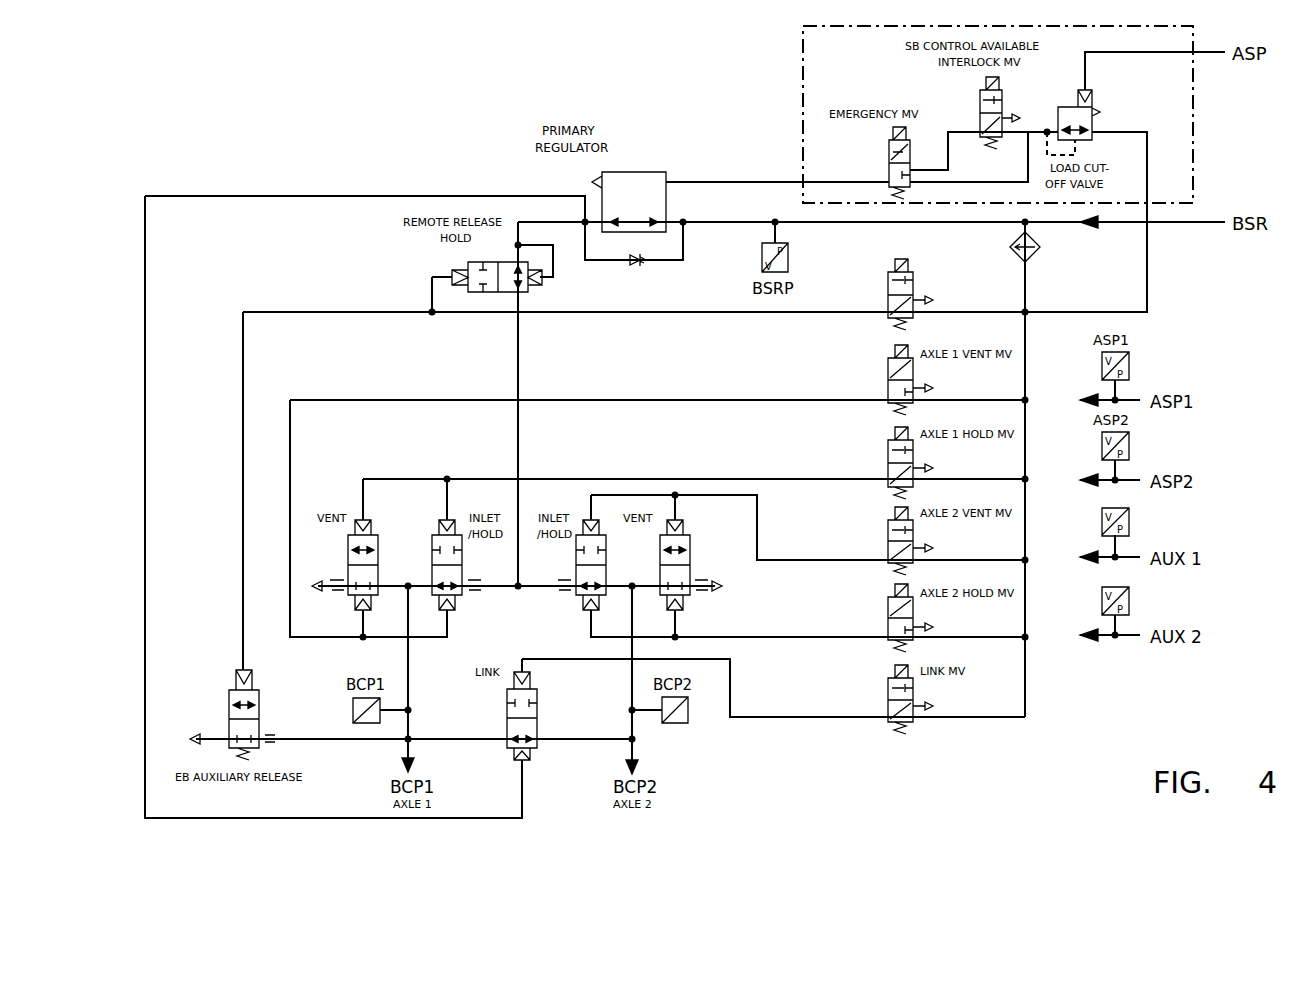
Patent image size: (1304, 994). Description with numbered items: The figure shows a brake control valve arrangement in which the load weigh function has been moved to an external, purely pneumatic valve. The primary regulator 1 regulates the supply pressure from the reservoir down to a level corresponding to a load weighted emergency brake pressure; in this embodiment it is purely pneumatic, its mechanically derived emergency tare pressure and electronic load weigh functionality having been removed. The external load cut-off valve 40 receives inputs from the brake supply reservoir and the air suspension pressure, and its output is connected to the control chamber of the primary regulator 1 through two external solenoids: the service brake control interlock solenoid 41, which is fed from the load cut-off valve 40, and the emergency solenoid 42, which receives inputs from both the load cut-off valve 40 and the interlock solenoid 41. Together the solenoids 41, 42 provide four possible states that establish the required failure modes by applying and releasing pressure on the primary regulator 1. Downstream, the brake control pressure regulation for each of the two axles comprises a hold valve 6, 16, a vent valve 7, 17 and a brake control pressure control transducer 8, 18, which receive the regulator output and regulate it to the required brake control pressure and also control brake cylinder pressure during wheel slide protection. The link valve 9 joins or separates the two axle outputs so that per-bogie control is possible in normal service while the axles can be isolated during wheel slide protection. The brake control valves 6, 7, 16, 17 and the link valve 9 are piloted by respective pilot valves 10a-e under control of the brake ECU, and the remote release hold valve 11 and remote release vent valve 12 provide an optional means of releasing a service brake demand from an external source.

The primary regulator 1 is at (633, 172).
The hold valve 6 is at (348, 545).
The vent valve 7 is at (432, 548).
The brake control pressure control transducer 8 is at (353, 710).
The link valve 9 is at (537, 700).
The pilot valves 10a-e is at (915, 727).
The remote release hold valve 11 is at (452, 277).
The remote release vent valve 12 is at (229, 697).
The hold valve 16 is at (591, 520).
The vent valve 17 is at (690, 540).
The brake control pressure control transducer 18 is at (680, 725).
The external load cut-off valve 40 is at (1092, 105).
The service brake control interlock solenoid 41 is at (980, 112).
The emergency solenoid 42 is at (889, 170).